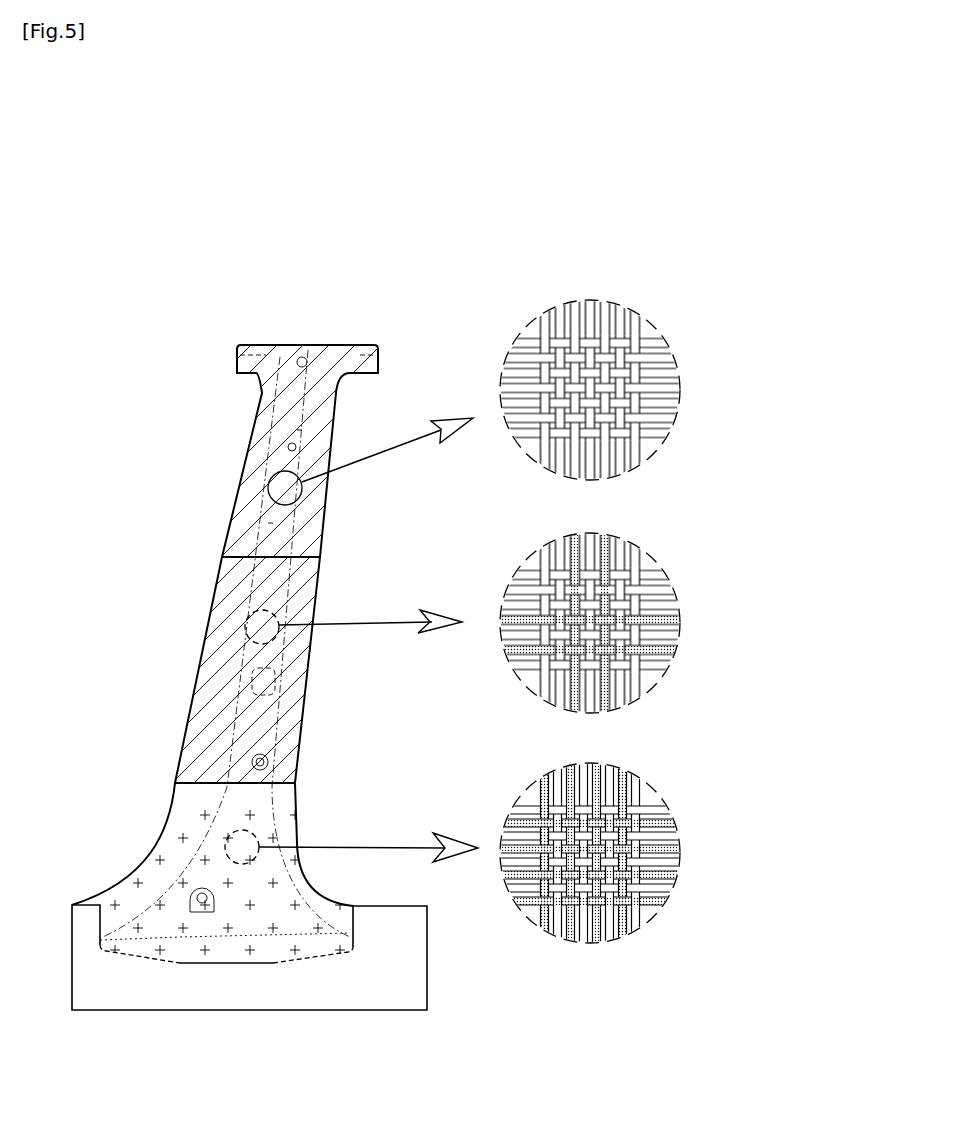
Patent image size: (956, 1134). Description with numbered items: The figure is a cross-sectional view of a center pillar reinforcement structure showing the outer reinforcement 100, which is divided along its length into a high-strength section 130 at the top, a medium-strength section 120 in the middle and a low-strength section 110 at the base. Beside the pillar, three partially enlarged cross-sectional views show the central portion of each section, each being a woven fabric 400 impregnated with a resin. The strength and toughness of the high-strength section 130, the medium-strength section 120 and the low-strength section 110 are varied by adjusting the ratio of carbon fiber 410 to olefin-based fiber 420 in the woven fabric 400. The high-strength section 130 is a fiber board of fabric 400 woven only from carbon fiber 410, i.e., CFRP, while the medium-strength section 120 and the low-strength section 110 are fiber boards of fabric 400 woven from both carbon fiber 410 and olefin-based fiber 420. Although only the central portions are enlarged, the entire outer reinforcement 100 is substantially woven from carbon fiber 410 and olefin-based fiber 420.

The outer reinforcement 100 is at (160, 572).
The low-strength section 110 is at (163, 852).
The medium-strength section 120 is at (205, 675).
The high-strength section 130 is at (262, 441).
The woven fabric 400 is at (683, 392).
The carbon fiber 410 is at (650, 338).
The olefin-based fiber 420 is at (677, 615).